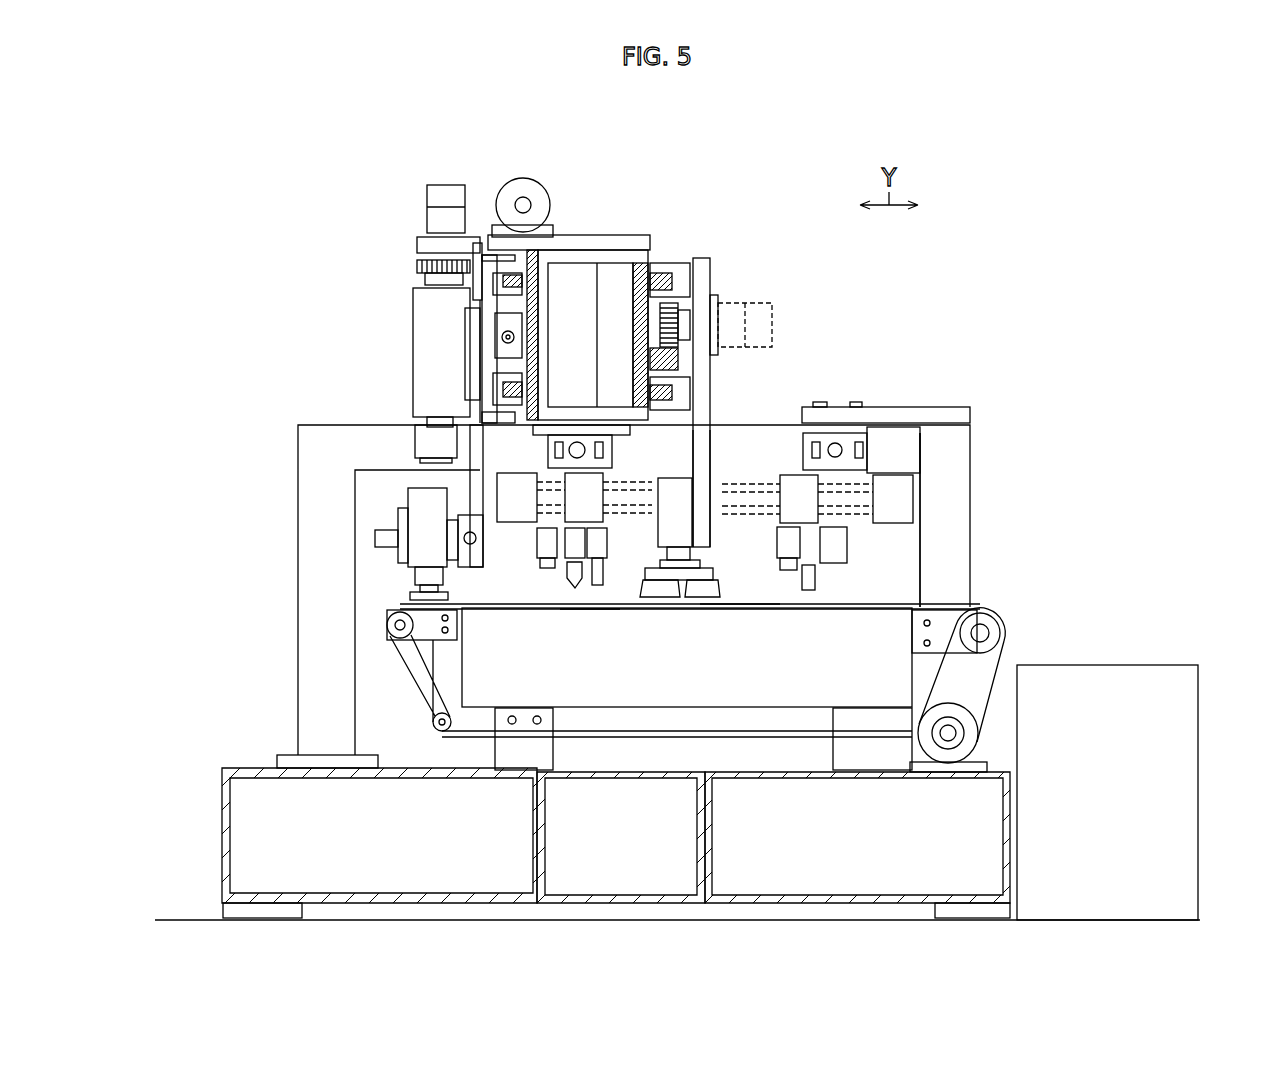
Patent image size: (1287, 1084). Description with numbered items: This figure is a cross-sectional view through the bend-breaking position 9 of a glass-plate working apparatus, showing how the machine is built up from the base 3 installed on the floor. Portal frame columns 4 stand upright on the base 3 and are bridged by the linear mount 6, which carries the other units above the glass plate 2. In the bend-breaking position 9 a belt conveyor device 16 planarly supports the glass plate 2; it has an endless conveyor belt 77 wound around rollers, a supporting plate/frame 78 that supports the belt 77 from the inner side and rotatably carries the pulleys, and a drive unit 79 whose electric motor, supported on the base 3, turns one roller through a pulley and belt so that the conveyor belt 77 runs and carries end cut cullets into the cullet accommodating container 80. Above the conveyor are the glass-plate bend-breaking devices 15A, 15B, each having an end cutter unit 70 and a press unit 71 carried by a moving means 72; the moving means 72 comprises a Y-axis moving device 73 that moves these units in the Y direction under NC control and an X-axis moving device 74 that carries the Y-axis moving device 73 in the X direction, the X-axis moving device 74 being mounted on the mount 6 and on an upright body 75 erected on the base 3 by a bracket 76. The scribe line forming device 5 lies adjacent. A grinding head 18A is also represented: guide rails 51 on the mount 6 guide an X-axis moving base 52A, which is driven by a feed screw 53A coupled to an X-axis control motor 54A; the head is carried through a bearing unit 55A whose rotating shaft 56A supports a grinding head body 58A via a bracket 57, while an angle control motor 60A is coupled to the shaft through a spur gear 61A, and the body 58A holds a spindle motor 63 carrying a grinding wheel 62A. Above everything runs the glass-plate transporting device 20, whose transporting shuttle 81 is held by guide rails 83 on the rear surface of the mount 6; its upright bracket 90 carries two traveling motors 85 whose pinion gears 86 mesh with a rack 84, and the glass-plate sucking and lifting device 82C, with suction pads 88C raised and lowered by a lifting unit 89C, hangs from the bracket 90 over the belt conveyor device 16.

The glass plate 2 is at (692, 600).
The base 3 is at (377, 872).
The frame column 4 is at (320, 438).
The scribe line forming device 5 is at (500, 335).
The mount 6 is at (570, 283).
The bend-breaking position 9 is at (735, 577).
The glass-plate bend-breaking device 15A is at (893, 443).
The glass-plate bend-breaking device 15B is at (510, 590).
The belt conveyor device 16 is at (582, 600).
The grinding head 18A is at (513, 368).
The glass-plate transporting device 20 is at (690, 323).
The guide rail 51 is at (520, 197).
The X-axis moving base 52A is at (485, 273).
The feed screw 53A is at (433, 305).
The X-axis control motor 54A is at (530, 197).
The bearing unit 55A is at (418, 258).
The rotating shaft 56A is at (437, 420).
The bracket 57 is at (480, 488).
The grinding head body 58A is at (427, 520).
The angle control motor 60A is at (443, 217).
The spur gear 61A is at (410, 247).
The grinding wheel 62A is at (410, 597).
The spindle motor 63 is at (377, 542).
The end cutter unit 70 is at (830, 555).
The press unit 71 is at (820, 582).
The moving means 72 is at (845, 490).
The Y-axis moving device 73 is at (893, 505).
The X-axis moving device 74 is at (417, 443).
The upright body 75 is at (945, 460).
The bracket 76 is at (604, 290).
The conveyor belt 77 is at (947, 607).
The supporting plate/frame 78 is at (790, 640).
The drive unit 79 is at (973, 733).
The cullet accommodating container 80 is at (1178, 782).
The transporting shuttle 81 is at (700, 262).
The glass-plate sucking and lifting device 82C is at (675, 528).
The guide rail 83 is at (634, 262).
The rack 84 is at (690, 347).
The traveling motor 85 is at (725, 310).
The pinion gear 86 is at (667, 323).
The suction pad 88C is at (668, 597).
The lifting unit 89C is at (675, 495).
The bracket 90 is at (700, 365).